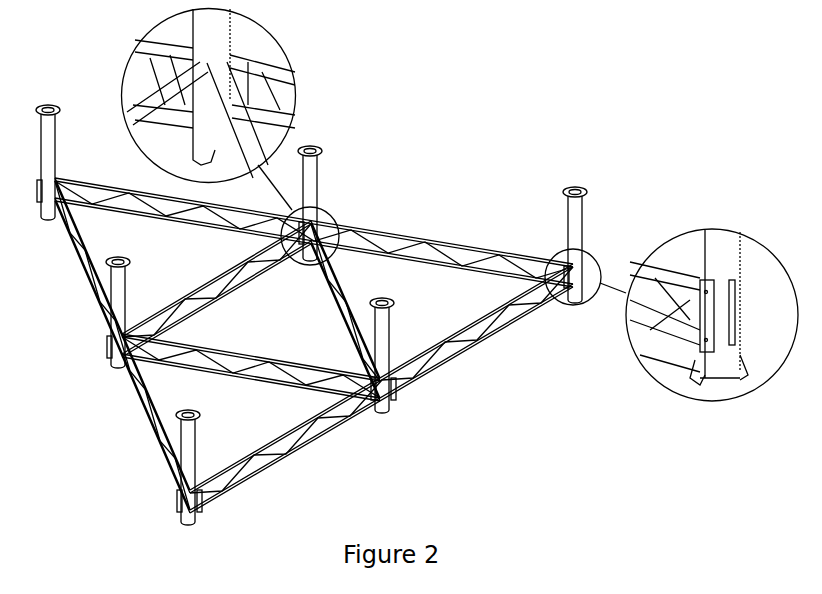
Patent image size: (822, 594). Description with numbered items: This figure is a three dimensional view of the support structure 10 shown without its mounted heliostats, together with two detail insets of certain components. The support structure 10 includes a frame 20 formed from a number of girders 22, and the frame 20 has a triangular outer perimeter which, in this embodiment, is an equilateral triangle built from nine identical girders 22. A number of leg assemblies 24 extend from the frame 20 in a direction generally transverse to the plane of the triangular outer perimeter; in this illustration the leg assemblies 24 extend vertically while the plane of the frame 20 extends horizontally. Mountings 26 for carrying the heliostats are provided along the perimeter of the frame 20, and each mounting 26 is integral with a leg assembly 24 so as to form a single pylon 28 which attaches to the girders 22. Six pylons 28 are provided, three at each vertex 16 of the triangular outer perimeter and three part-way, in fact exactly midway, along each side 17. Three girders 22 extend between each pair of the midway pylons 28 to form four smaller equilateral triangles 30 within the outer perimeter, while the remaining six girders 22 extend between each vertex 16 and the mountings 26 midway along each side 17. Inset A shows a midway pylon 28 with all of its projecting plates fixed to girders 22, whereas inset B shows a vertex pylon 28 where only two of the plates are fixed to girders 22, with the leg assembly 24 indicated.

The support structure 10 is at (626, 486).
The vertex 16 is at (407, 289).
The side 17 is at (440, 205).
The frame 20 is at (362, 222).
The girder 22 is at (462, 246).
The leg assembly 24 is at (720, 380).
The mounting 26 is at (52, 104).
The pylon 28 is at (312, 178).
The smaller equilateral triangle 30 is at (175, 275).